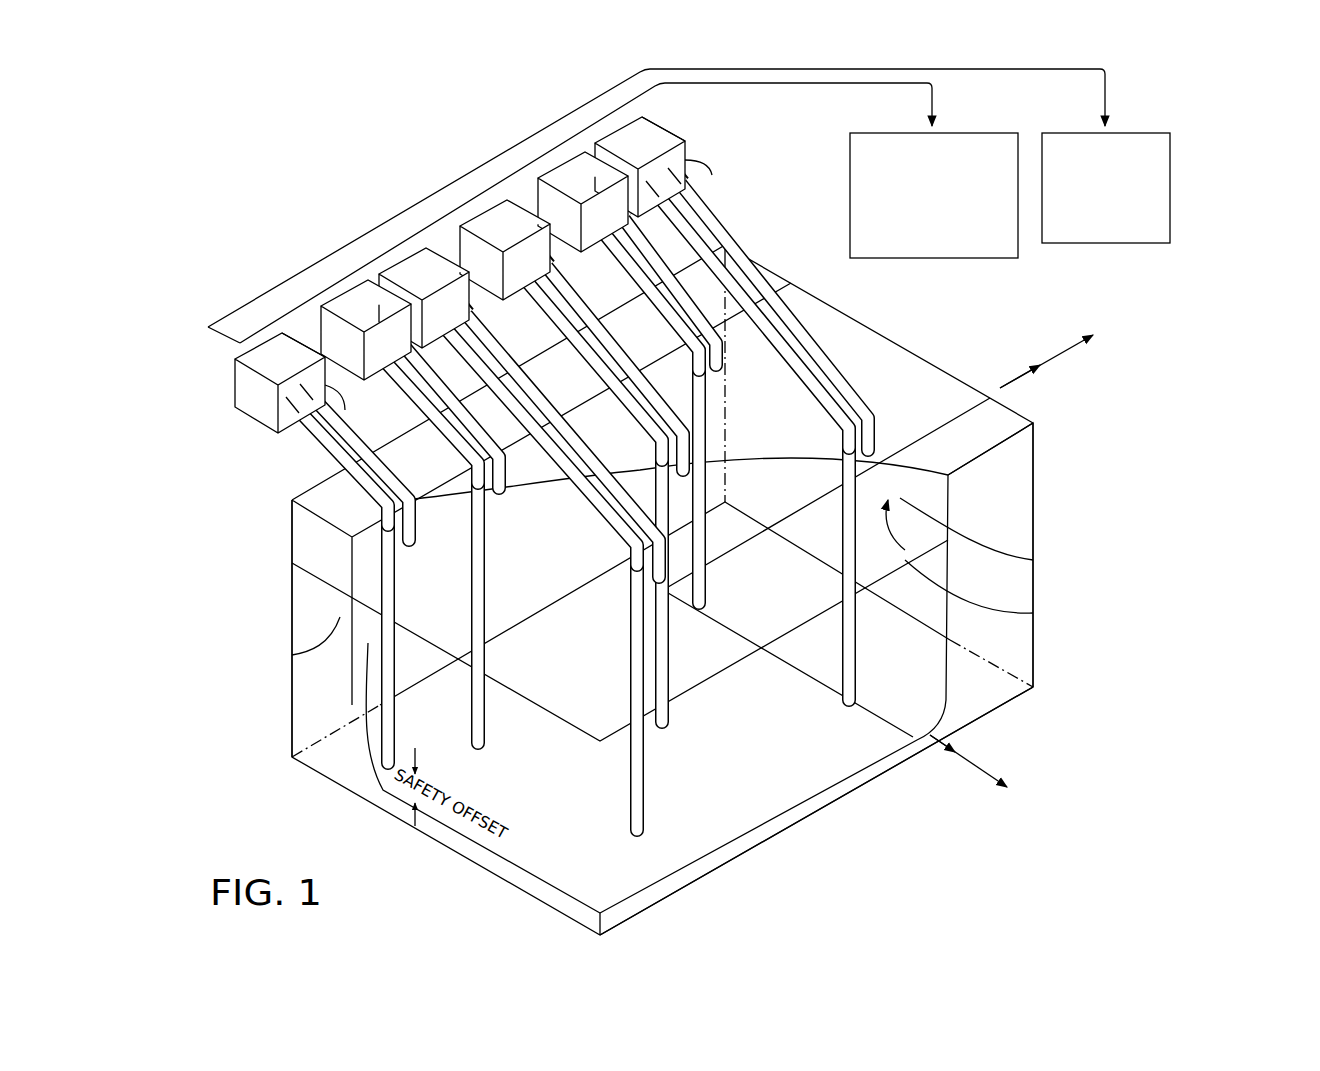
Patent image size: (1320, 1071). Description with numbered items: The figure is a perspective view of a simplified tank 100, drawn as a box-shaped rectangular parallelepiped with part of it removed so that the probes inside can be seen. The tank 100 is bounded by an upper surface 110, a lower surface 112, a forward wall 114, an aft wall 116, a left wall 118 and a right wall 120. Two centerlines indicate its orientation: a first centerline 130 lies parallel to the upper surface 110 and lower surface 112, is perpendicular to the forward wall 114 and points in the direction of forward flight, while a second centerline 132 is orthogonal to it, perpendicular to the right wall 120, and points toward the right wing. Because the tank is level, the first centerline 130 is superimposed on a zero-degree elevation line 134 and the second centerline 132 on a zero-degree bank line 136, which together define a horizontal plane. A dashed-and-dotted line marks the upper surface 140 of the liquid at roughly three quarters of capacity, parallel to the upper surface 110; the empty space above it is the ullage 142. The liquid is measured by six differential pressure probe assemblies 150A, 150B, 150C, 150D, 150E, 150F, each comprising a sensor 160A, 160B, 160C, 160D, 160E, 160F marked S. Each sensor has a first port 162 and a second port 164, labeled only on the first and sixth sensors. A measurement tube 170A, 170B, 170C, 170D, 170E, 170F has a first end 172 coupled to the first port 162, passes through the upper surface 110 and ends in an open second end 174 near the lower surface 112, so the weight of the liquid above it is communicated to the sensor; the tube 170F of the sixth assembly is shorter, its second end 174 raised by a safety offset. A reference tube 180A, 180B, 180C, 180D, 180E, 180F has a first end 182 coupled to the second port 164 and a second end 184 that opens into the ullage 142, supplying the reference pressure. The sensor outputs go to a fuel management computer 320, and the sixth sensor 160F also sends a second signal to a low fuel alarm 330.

The tank 100 is at (1178, 443).
The upper surface 110 is at (845, 332).
The lower surface 112 is at (760, 820).
The forward wall 114 is at (1018, 657).
The aft wall 116 is at (340, 617).
The left wall 118 is at (366, 700).
The right wall 120 is at (1012, 457).
The first centerline 130 is at (1003, 385).
The second centerline 132 is at (935, 740).
The 0° elevation line 134 is at (1058, 337).
The 0° bank line 136 is at (987, 773).
The upper surface of the liquid 140 is at (1033, 613).
The ullage 142 is at (1015, 565).
The first differential pressure probe assembly 150A is at (620, 122).
The second differential pressure probe assembly 150B is at (565, 157).
The third differential pressure probe assembly 150C is at (485, 205).
The fourth differential pressure probe assembly 150D is at (405, 252).
The fifth differential pressure probe assembly 150E is at (345, 287).
The sixth differential pressure probe assembly 150F is at (258, 336).
The differential pressure sensor 160A is at (668, 135).
The differential pressure sensor 160B is at (590, 225).
The differential pressure sensor 160C is at (487, 268).
The differential pressure sensor 160D is at (432, 350).
The differential pressure sensor 160E is at (330, 340).
The differential pressure sensor 160F is at (258, 430).
The first port 162 is at (695, 198).
The second port 164 is at (685, 168).
The measurement tube 170A is at (745, 275).
The measurement tube 170B is at (704, 535).
The measurement tube 170C is at (670, 695).
The measurement tube 170D is at (630, 630).
The measurement tube 170E is at (486, 697).
The measurement tube 170F is at (396, 738).
The first end 172 is at (705, 178).
The second end 174 is at (383, 779).
The reference tube 180A is at (720, 224).
The reference tube 180B is at (726, 372).
The reference tube 180C is at (612, 285).
The reference tube 180D is at (612, 518).
The reference tube 180E is at (502, 488).
The reference tube 180F is at (345, 457).
The first end 182 is at (672, 140).
The second end 184 is at (499, 490).
The fuel management computer 320 is at (913, 250).
The low fuel alarm 330 is at (1085, 235).